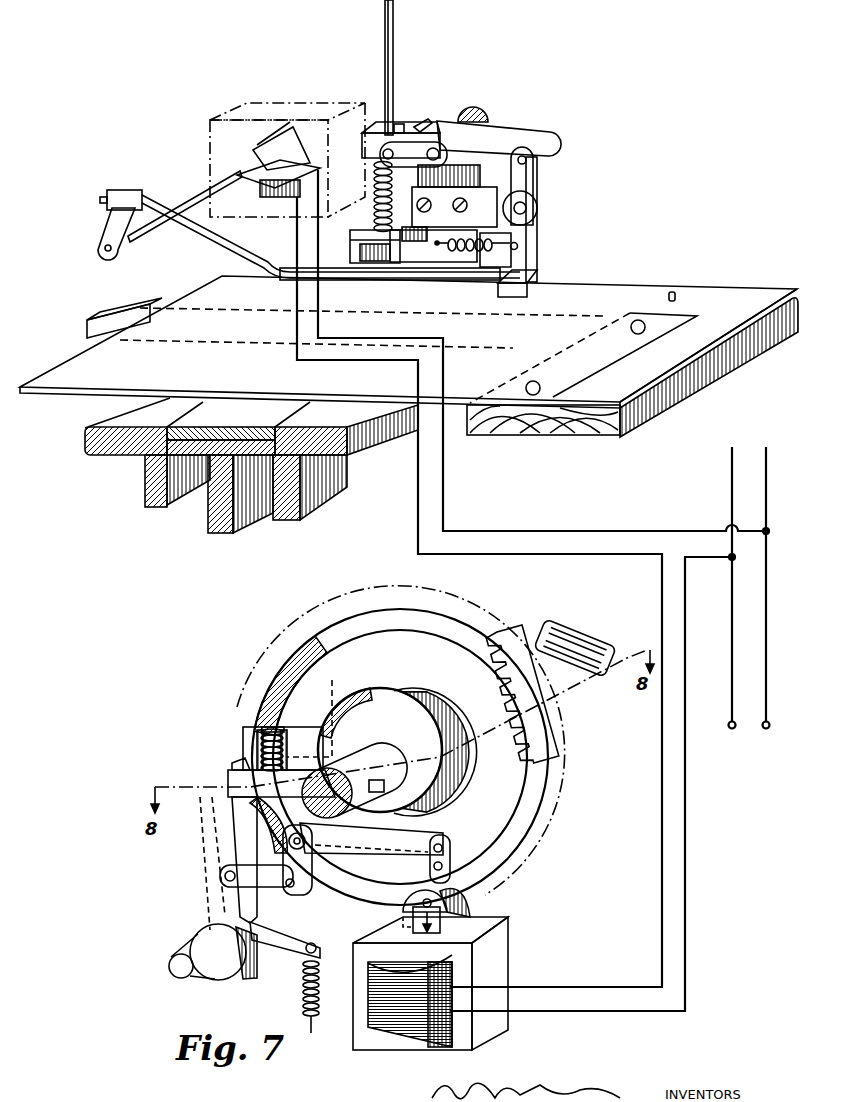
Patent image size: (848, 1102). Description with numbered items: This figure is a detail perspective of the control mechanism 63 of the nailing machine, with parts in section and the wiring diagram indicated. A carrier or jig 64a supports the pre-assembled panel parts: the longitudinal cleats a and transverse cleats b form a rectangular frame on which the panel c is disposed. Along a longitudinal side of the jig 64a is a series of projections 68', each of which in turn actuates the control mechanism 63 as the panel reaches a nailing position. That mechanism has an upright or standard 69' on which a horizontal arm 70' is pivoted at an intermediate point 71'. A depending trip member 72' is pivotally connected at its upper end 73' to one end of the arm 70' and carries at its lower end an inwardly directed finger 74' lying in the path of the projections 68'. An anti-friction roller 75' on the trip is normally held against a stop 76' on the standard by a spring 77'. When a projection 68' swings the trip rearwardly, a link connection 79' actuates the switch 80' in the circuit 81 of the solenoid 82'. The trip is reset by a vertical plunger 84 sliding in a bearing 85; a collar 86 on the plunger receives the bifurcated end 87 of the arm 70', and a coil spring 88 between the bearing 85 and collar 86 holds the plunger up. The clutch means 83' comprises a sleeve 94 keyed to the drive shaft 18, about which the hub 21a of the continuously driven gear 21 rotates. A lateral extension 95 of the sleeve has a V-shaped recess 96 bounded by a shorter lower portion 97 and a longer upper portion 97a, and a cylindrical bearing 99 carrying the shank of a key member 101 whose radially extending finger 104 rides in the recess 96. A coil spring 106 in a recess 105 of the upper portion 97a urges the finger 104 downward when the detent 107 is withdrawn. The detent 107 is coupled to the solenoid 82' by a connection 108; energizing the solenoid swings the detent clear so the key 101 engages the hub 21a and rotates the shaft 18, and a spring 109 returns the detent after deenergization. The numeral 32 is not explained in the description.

The vertical plunger 84 is at (394, 42).
The control mechanism 63 is at (449, 105).
The collar 86 is at (399, 122).
The bifurcated end 87 is at (423, 124).
The upright or standard 69' is at (491, 103).
The horizontally disposed arm 70' is at (499, 132).
The upper end of trip member 73' is at (537, 167).
The intermediate pivot point 71' is at (413, 154).
The stop 76' is at (490, 197).
The anti-friction roller 75' is at (536, 206).
The coil spring 88 is at (373, 216).
The bearing 85 is at (352, 240).
The inwardly directed finger 74' is at (538, 227).
The spring 77' is at (503, 236).
The trip member 72' is at (541, 246).
The switch 80' is at (287, 146).
The link connection 79' is at (309, 224).
The panel c is at (70, 372).
The carrier or frame (holder or jig) 64a is at (690, 388).
The transverse cleat b is at (503, 430).
The longitudinal cleat a is at (137, 307).
The projection (actuating device) 68' is at (681, 284).
The frame 32 is at (147, 490).
The circuit 81 is at (575, 557).
The gear 21 is at (412, 604).
The hub of gear 21a is at (450, 722).
The key member 101 is at (404, 722).
The male member or sleeve 94 is at (366, 700).
The cylindrical bearing 99 is at (316, 718).
The lateral extension 95 is at (300, 727).
The coil spring 106 is at (290, 748).
The recess 105 is at (287, 760).
The clutch means 83' is at (250, 762).
The radially extending finger 104 is at (224, 777).
The upper portion 97a is at (235, 763).
The drive shaft 18 is at (573, 638).
The V-shaped recess 96 is at (240, 798).
The lower portion 97 is at (277, 820).
The detent 107 is at (240, 815).
The connection 108 is at (363, 850).
The spring 109 is at (302, 983).
The solenoid 82' is at (430, 985).